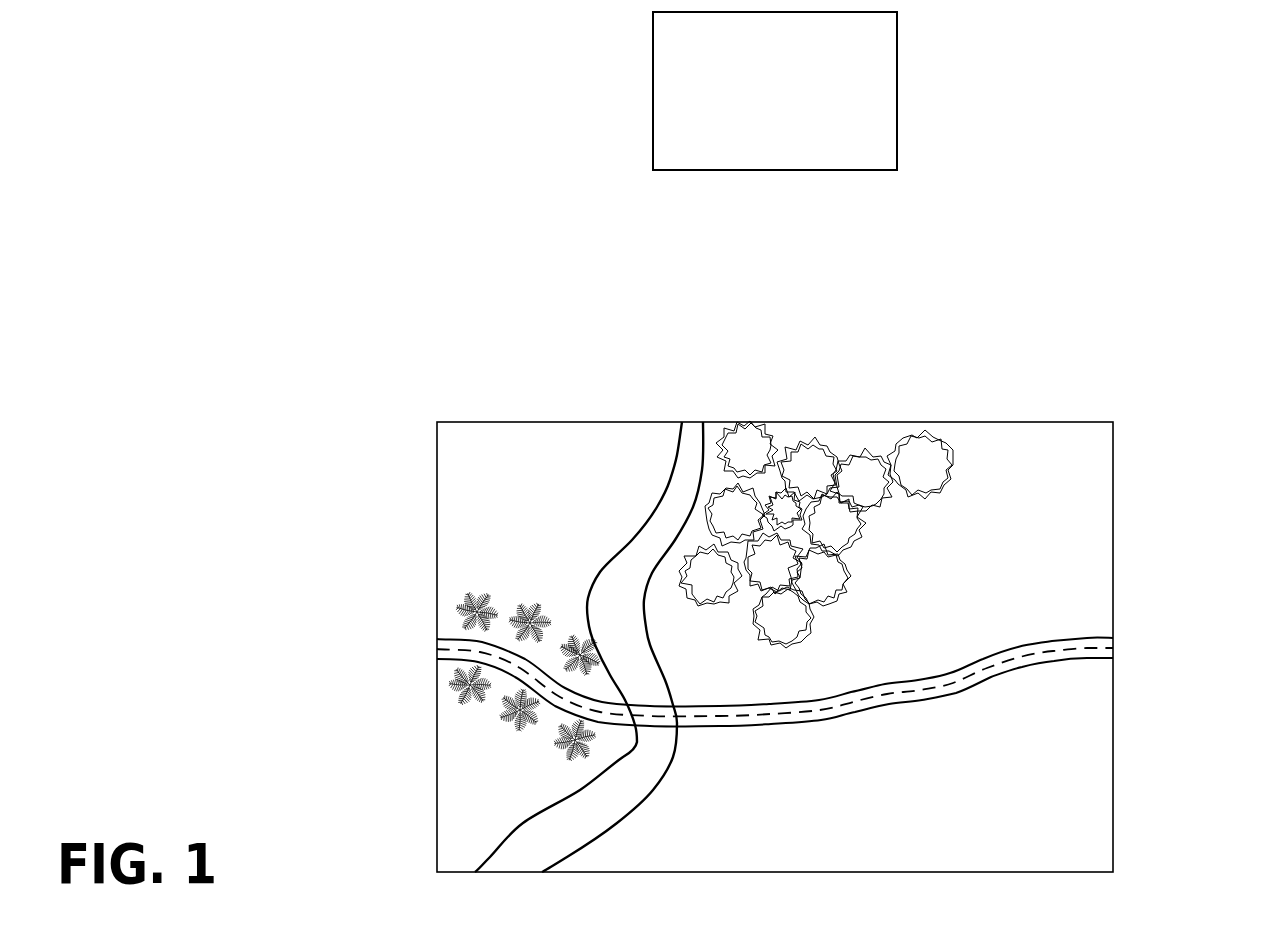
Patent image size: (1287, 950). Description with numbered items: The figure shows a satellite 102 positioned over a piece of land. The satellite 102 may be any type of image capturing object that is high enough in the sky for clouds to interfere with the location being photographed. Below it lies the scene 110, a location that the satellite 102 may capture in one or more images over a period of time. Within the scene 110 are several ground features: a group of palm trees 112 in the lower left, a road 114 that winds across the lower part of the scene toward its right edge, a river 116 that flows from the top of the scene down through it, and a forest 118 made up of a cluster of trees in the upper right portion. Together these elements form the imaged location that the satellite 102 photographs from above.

The satellite 102 is at (853, 104).
The scene 110 is at (977, 432).
The palm trees 112 is at (447, 613).
The road 114 is at (1108, 643).
The river 116 is at (688, 426).
The forest 118 is at (830, 447).